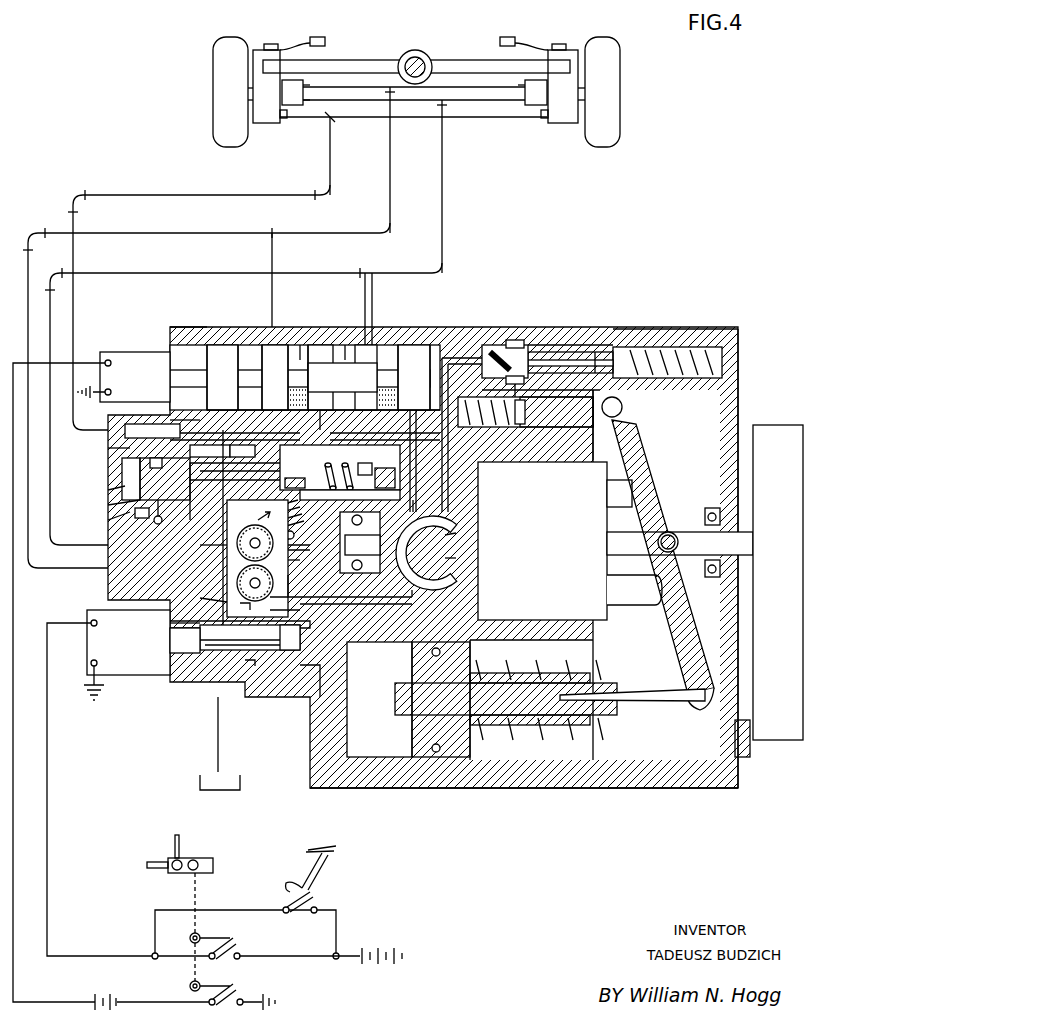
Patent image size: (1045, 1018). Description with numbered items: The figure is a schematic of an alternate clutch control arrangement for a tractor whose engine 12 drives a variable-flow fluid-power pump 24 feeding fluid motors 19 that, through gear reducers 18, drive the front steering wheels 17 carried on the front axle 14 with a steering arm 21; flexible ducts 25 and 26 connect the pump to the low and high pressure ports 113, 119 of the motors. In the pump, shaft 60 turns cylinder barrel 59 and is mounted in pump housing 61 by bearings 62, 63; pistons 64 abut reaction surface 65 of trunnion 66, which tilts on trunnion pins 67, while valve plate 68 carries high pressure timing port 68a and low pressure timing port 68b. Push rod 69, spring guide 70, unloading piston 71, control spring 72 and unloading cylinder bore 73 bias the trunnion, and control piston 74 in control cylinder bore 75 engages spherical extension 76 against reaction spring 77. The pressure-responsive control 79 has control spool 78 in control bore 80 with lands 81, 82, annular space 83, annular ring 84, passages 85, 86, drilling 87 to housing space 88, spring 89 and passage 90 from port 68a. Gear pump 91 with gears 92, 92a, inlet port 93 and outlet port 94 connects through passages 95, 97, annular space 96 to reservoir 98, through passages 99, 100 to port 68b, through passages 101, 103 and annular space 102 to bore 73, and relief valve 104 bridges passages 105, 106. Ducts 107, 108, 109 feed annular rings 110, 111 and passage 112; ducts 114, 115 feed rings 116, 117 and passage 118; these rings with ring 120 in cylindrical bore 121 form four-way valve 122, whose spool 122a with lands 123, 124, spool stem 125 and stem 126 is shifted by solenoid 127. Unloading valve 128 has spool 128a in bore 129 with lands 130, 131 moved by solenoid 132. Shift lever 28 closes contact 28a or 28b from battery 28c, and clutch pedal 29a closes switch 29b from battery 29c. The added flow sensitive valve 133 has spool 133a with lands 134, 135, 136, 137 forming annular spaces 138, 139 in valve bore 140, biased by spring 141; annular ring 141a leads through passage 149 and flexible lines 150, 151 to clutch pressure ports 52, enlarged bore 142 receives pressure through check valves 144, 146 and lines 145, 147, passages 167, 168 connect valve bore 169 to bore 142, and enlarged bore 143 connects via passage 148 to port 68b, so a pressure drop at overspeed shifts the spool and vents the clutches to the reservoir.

The engine 12 is at (778, 582).
The front axle 14 is at (397, 58).
The front steering wheel 17 is at (215, 75).
The mechanical gear reducer 18 is at (415, 83).
The fluid motor 19 is at (414, 92).
The steering arm 21 is at (325, 37).
The variable-flow fluid-power pump 24 is at (748, 373).
The flexible duct 25 is at (393, 158).
The flexible duct 26 is at (443, 162).
The gear shift lever 28 is at (180, 846).
The contact 28a is at (240, 988).
The contact 28b is at (235, 942).
The battery 28c is at (111, 995).
The clutch pedal 29a is at (320, 866).
The switch 29b is at (310, 898).
The battery 29c is at (377, 948).
The pressure port 52 is at (283, 118).
The cylinder barrel 59 is at (542, 541).
The shaft 60 is at (748, 545).
The pump housing 61 is at (632, 788).
The bearing 62 is at (722, 566).
The bearing 63 is at (360, 575).
The piston 64 is at (630, 602).
The reaction surface 65 is at (695, 662).
The trunnion 66 is at (645, 468).
The trunnion pin 67 is at (672, 530).
The valve plate 68 is at (425, 590).
The high pressure timing port 68a is at (435, 531).
The low pressure timing port 68b is at (435, 555).
The push rod 69 is at (650, 696).
The spring guide 70 is at (612, 672).
The unloading piston 71 is at (441, 699).
The control spring 72 is at (548, 655).
The unloading cylinder bore 73 is at (379, 699).
The control piston 74 is at (525, 412).
The control cylinder bore 75 is at (525, 410).
The spherical extension 76 is at (622, 407).
The reaction spring 77 is at (475, 428).
The control spool 78 is at (562, 345).
The automatic pressure-responsive pump control 79 is at (637, 345).
The control bore 80 is at (655, 345).
The land 81 is at (596, 350).
The land 82 is at (505, 345).
The annular space 83 is at (545, 350).
The annular ring 84 is at (512, 340).
The passage 85 is at (510, 390).
The passage 86 is at (582, 350).
The drilling 87 is at (590, 390).
The space 88 is at (646, 425).
The control spool spring 89 is at (665, 345).
The passage 90 is at (443, 345).
The fixed-displacement gear pump 91 is at (236, 604).
The driving gear 92 is at (237, 545).
The driven gear 92a is at (237, 583).
The inlet port 93 is at (227, 560).
The outlet port 94 is at (299, 562).
The passage 95 is at (209, 599).
The annular space 96 is at (187, 650).
The passage 97 is at (226, 728).
The reservoir 98 is at (242, 765).
The passage 99 is at (350, 585).
The passage 100 is at (350, 600).
The passage 101 is at (292, 612).
The annular space 102 is at (237, 668).
The passage 103 is at (315, 695).
The relief valve 104 is at (300, 520).
The passage 105 is at (296, 549).
The passage 106 is at (241, 519).
The duct 107 is at (399, 461).
The duct 108 is at (268, 422).
The duct 109 is at (207, 412).
The annular ring 110 is at (215, 330).
The annular ring 111 is at (262, 327).
The passage 112 is at (288, 340).
The low pressure port 113 is at (310, 84).
The duct 114 is at (395, 442).
The duct 115 is at (318, 413).
The annular ring 116 is at (310, 345).
The annular ring 117 is at (363, 340).
The passage 118 is at (373, 340).
The high pressure port 119 is at (313, 112).
The annular ring 120 is at (405, 345).
The cylindrical bore 121 is at (238, 327).
The four-way valve 122 is at (167, 384).
The spool 122a is at (300, 377).
The land 123 is at (298, 345).
The land 124 is at (390, 345).
The spool stem 125 is at (345, 345).
The stem 126 is at (230, 372).
The solenoid 127 is at (80, 678).
The unloading valve 128 is at (166, 648).
The valve spool 128a is at (212, 620).
The unloading valve bore 129 is at (292, 633).
The land 130 is at (170, 623).
The land 131 is at (292, 648).
The solenoid 132 is at (129, 789).
The flow sensitive valve 133 is at (129, 474).
The spool 133a is at (101, 502).
The land 134 is at (230, 479).
The land 135 is at (185, 518).
The land 136 is at (244, 462).
The land 137 is at (338, 468).
The annular space 138 is at (212, 462).
The annular space 139 is at (294, 470).
The valve bore 140 is at (397, 500).
The spring 141 is at (366, 460).
The annular ring 141a is at (288, 444).
The enlarged bore 142 is at (99, 520).
The enlarged bore 143 is at (108, 488).
The check valve 144 is at (140, 518).
The line 145 is at (218, 274).
The check valve 146 is at (205, 500).
The line 147 is at (160, 234).
The passage 148 is at (108, 448).
The passage 149 is at (125, 430).
The flexible line 150 is at (222, 195).
The flexible line 151 is at (366, 113).
The passage 167 is at (165, 464).
The passage 168 is at (320, 503).
The valve bore 169 is at (388, 467).